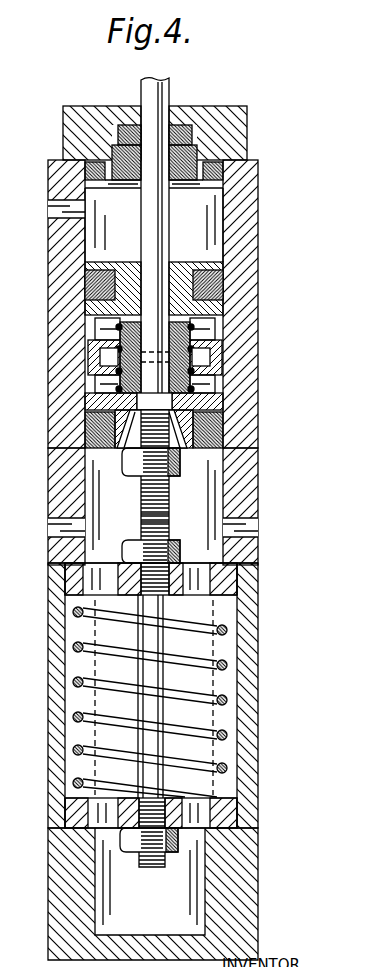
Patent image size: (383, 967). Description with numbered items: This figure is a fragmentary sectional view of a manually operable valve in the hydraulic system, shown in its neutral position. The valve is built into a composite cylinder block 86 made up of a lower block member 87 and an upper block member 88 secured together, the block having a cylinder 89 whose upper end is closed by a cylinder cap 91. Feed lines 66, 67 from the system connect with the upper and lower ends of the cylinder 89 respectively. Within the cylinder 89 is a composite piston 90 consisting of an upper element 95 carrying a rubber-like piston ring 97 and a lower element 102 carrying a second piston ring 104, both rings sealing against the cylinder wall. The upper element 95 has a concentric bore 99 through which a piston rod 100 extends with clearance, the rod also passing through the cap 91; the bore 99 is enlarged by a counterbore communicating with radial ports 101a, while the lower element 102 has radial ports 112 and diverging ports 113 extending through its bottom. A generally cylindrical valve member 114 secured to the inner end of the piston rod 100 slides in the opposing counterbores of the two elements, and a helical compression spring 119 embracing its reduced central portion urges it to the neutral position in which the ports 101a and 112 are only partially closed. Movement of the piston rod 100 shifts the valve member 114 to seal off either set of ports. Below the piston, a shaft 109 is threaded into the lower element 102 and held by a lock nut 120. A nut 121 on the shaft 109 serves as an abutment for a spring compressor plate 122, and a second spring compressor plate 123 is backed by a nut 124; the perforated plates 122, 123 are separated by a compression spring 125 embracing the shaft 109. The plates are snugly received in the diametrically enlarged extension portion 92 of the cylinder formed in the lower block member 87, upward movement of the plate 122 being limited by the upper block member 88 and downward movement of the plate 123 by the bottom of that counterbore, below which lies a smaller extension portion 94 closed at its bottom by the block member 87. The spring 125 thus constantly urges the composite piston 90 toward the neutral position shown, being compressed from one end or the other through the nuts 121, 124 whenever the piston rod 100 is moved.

The cylinder cap 91 is at (244, 120).
The composite cylinder block 86 is at (268, 150).
The feed line 66 is at (62, 213).
The piston rod 100 is at (154, 216).
The cylinder 89 is at (222, 231).
The upper element 95 is at (127, 263).
The concentric bore 99 is at (176, 262).
The piston 90 is at (195, 259).
The piston ring 97 is at (219, 287).
The radial ports 101a is at (107, 325).
The valve member 114 is at (190, 352).
The helical compression spring 119 is at (112, 373).
The radial ports 112 is at (95, 385).
The lower element 102 is at (212, 400).
The piston ring 104 is at (222, 432).
The ports 113 is at (124, 445).
The lock nut 120 is at (169, 637).
The upper block member 88 is at (246, 499).
The shaft 109 is at (150, 519).
The feed line 67 is at (52, 530).
The nut 121 is at (179, 553).
The spring compressor plate 122 is at (224, 582).
The extension portion 92 is at (228, 644).
The lower block member 87 is at (242, 682).
The compression spring 125 is at (226, 766).
The spring compressor plate 123 is at (222, 813).
The nut 124 is at (171, 852).
The extension portion 94 is at (179, 920).